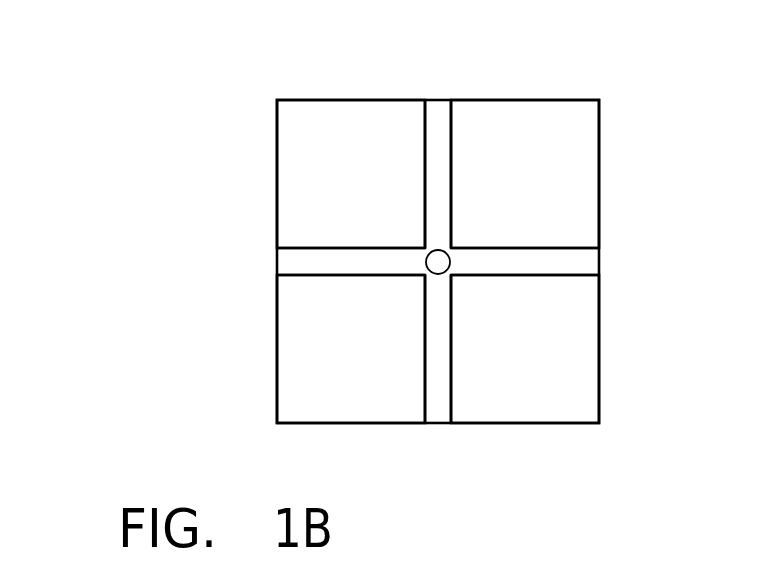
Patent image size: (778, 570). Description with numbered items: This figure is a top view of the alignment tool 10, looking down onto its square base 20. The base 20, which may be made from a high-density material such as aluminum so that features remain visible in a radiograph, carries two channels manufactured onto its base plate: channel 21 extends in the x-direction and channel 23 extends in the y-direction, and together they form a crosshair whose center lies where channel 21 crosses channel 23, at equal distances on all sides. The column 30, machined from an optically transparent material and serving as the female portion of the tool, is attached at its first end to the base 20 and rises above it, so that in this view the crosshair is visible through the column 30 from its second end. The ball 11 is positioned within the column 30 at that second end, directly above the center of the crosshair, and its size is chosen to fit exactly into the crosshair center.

The alignment tool 10 is at (148, 77).
The base 20 is at (276, 145).
The channel 21 is at (276, 262).
The channel 23 is at (437, 100).
The column 30 is at (553, 127).
The ball 11 is at (445, 267).